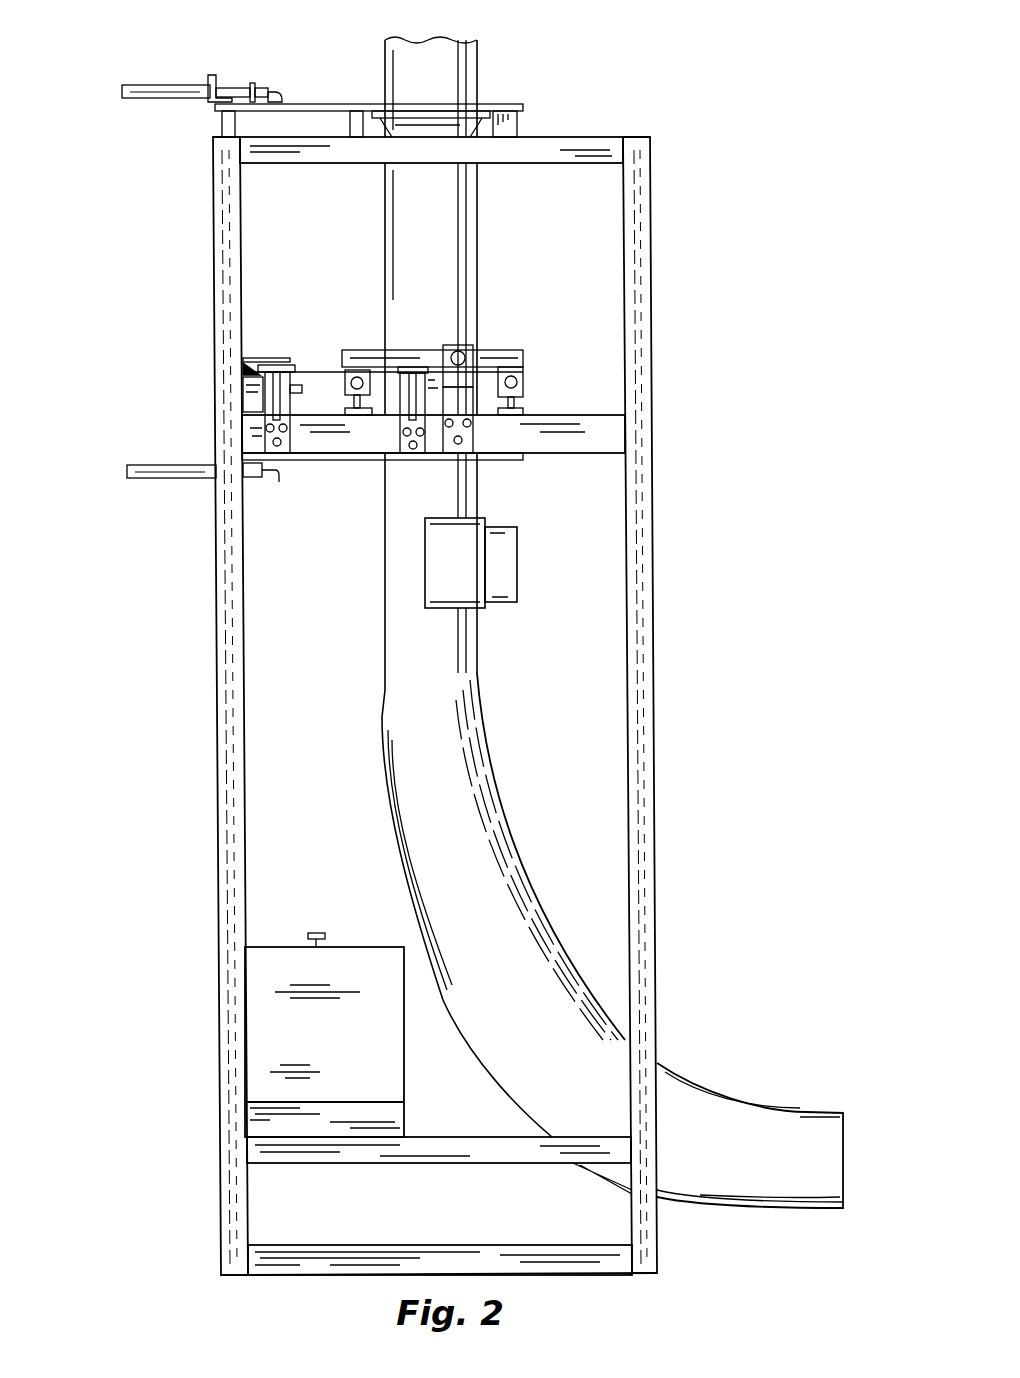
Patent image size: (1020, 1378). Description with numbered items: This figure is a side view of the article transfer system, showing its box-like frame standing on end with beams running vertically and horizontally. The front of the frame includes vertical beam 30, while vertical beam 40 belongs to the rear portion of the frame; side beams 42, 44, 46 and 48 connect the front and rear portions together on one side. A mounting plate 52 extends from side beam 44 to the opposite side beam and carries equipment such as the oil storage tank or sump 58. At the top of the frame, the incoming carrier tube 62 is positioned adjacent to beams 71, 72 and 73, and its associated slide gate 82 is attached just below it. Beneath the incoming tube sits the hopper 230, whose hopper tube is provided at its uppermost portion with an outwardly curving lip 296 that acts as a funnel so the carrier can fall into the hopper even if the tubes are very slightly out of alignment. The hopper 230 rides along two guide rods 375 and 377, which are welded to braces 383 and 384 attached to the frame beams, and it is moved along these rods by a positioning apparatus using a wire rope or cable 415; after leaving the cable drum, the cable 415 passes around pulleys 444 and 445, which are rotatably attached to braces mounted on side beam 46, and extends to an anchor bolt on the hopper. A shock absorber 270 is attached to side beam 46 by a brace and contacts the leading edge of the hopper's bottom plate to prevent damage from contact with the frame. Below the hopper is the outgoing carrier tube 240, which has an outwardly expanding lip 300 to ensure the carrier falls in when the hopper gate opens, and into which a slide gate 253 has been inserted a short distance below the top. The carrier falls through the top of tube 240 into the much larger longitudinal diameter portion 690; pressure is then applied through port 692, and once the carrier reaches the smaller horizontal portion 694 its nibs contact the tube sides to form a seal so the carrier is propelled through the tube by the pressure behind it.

The vertical beam 30 is at (645, 605).
The vertical beam 40 is at (228, 657).
The side beam 42 is at (568, 1252).
The side beam 44 is at (522, 1152).
The side beam 46 is at (606, 437).
The side beam 48 is at (598, 150).
The mounting plate 52 is at (250, 1115).
The oil storage tank 58 is at (273, 1008).
The incoming carrier tube 62 is at (413, 37).
The beam 71 is at (222, 125).
The beam 72 is at (352, 126).
The beam 73 is at (520, 120).
The slide gate 82 is at (312, 104).
The hopper 230 is at (452, 240).
The outgoing carrier tube 240 is at (450, 690).
The slide gate 253 is at (300, 462).
The shock absorber 270 is at (465, 370).
The outwardly curving lip 296 is at (468, 123).
The outwardly expanding lip 300 is at (384, 390).
The guide rod 375 is at (357, 377).
The guide rod 377 is at (511, 378).
The brace 383 is at (347, 397).
The brace 384 is at (515, 398).
The cable 415 is at (243, 368).
The pulley 444 is at (265, 358).
The pulley 445 is at (410, 366).
The larger longitudinal diameter portion 690 is at (518, 837).
The port 692 is at (517, 563).
The smaller horizontal portion 694 is at (806, 1113).